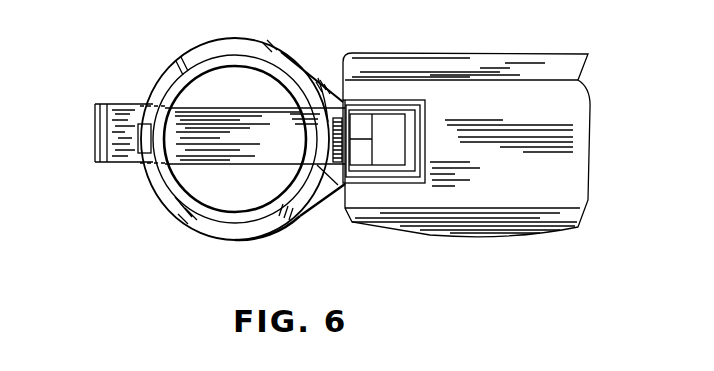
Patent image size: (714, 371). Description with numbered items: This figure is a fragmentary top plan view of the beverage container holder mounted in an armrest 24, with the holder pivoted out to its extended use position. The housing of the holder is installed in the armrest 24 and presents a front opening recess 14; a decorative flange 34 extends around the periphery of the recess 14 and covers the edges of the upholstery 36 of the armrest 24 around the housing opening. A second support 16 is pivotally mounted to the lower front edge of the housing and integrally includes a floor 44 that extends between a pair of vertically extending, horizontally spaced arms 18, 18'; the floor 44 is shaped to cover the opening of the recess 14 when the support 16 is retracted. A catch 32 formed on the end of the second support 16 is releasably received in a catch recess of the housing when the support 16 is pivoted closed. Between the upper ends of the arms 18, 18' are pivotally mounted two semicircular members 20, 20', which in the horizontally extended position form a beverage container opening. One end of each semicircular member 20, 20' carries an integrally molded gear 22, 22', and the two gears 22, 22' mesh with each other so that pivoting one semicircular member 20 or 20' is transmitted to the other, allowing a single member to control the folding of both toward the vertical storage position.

The recess 14 is at (397, 148).
The second support 16 is at (227, 168).
The arm 18 is at (377, 139).
The arm 18' is at (124, 163).
The semicircular member 20 is at (235, 153).
The semicircular member 20' is at (312, 75).
The gear 22 is at (322, 207).
The gear 22' is at (351, 89).
The armrest 24 is at (505, 244).
The catch 32 is at (100, 132).
The decorative flange 34 is at (421, 130).
The upholstery 36 is at (530, 184).
The floor 44 is at (232, 130).